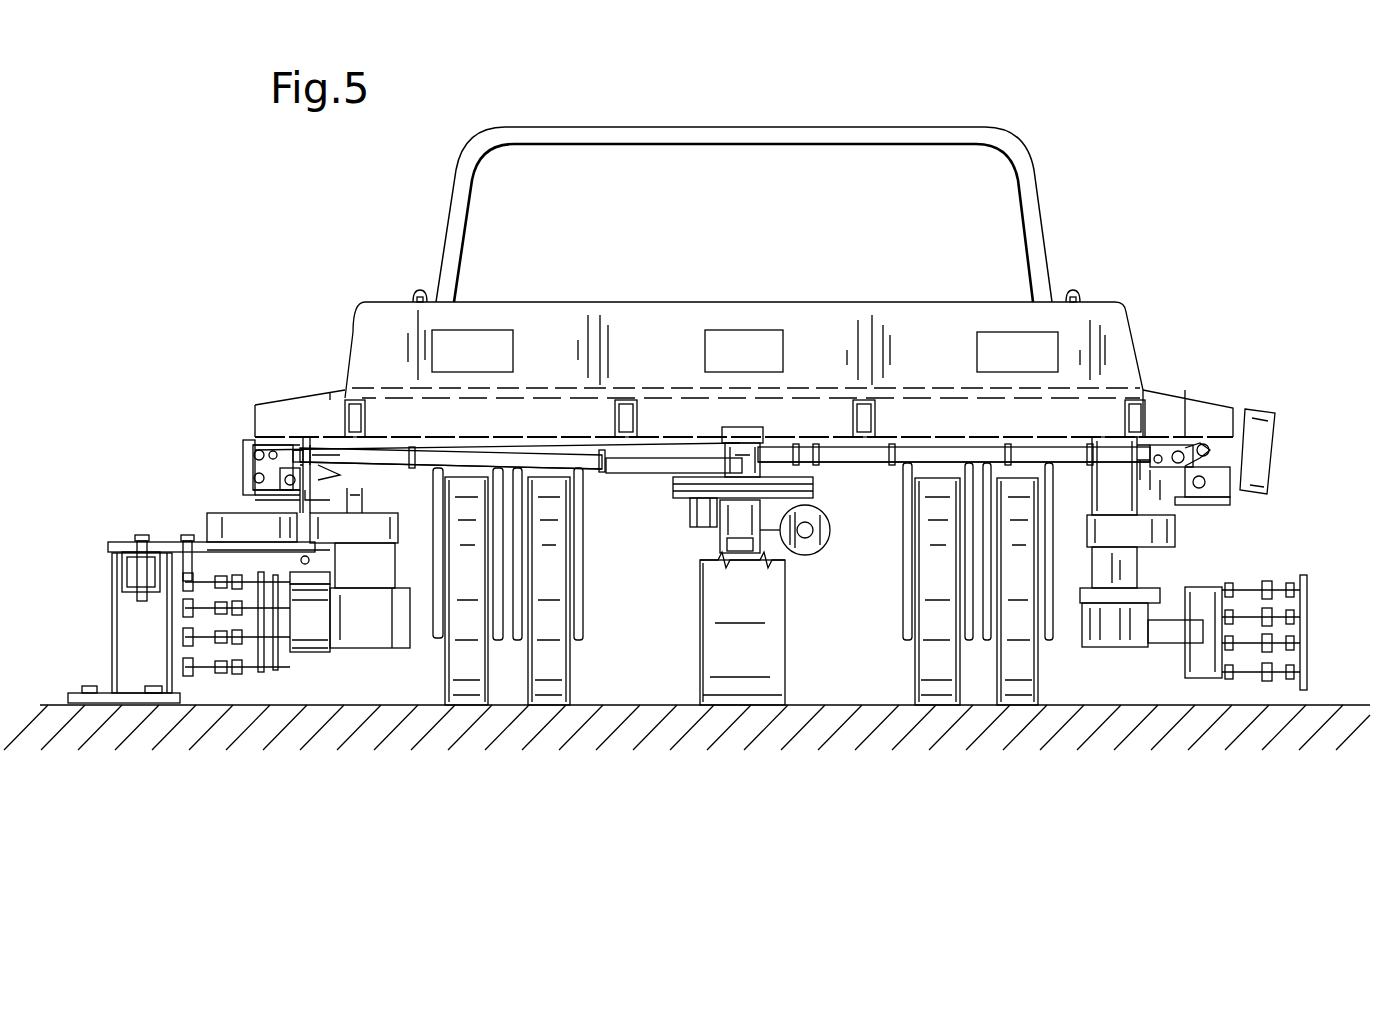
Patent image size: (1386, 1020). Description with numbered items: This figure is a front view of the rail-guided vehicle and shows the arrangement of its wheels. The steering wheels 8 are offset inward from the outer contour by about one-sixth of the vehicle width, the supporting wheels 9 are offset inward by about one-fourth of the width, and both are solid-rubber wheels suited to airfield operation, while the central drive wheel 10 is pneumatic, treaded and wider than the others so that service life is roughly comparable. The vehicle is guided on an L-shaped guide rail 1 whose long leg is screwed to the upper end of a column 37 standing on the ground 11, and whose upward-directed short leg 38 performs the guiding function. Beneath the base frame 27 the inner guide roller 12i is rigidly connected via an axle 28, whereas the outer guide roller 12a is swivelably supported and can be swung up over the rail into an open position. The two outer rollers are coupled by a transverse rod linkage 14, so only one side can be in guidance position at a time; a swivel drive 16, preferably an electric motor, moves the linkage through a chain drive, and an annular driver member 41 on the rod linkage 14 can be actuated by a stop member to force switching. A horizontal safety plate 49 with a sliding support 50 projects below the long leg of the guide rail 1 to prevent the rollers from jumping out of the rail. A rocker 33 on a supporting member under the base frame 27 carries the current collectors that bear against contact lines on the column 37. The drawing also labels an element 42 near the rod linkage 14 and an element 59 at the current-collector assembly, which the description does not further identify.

The guide rail 1 is at (117, 547).
The steering wheels 8 is at (463, 690).
The supporting wheels 9 is at (543, 690).
The drive wheel 10 is at (712, 690).
The ground 11 is at (843, 705).
The outer guide roller 12a is at (207, 523).
The inner guide roller 12i is at (380, 492).
The rod linkage 14 is at (522, 460).
The swivel drive 16 is at (821, 543).
The base frame 27 is at (650, 420).
The axle 28 is at (340, 470).
The rocker 33 is at (330, 630).
The column 37 is at (142, 657).
The short leg 38 is at (248, 465).
The driver member 41 is at (297, 452).
The guide rail 42 is at (410, 455).
The safety plate 49 is at (318, 612).
The sliding support 50 is at (290, 578).
The nozzle 59 is at (276, 655).